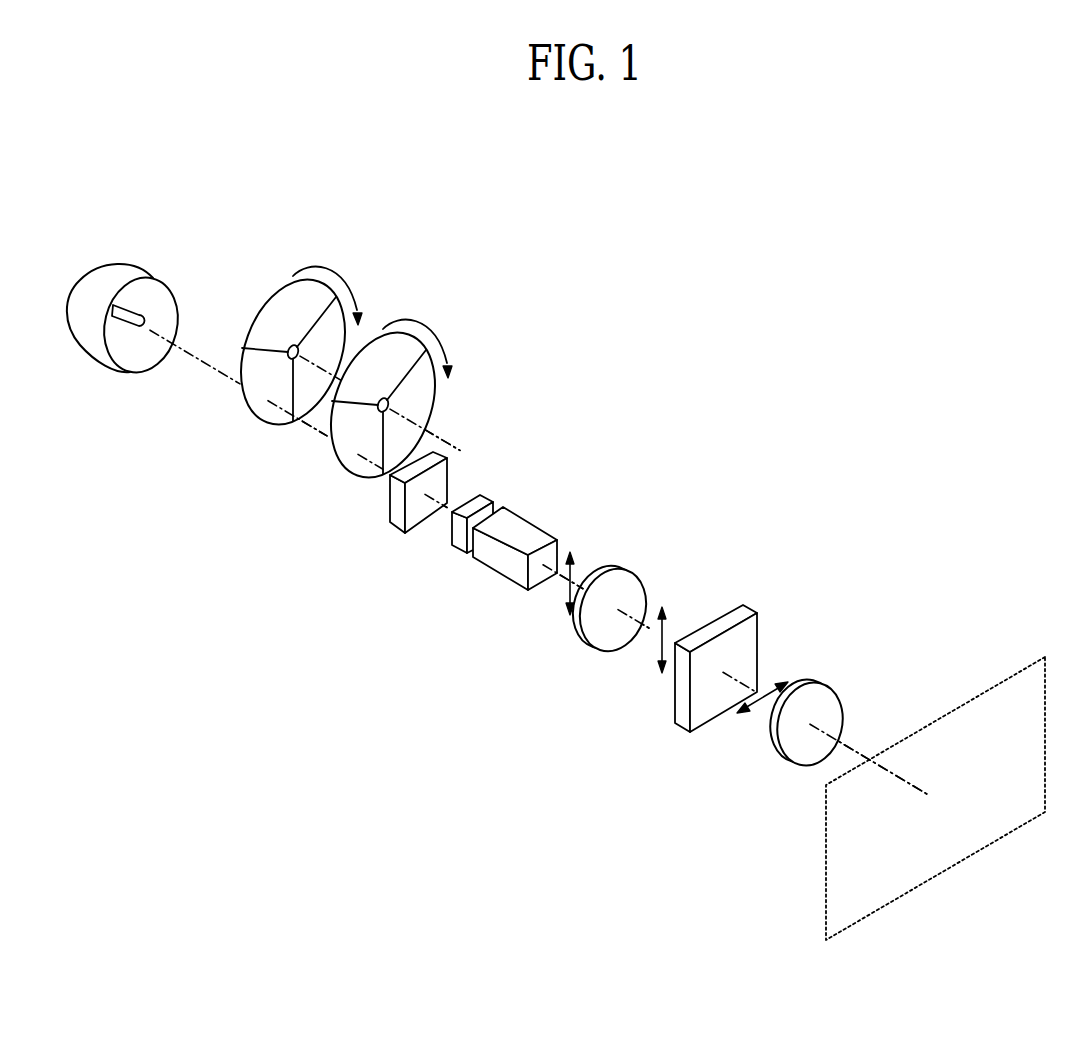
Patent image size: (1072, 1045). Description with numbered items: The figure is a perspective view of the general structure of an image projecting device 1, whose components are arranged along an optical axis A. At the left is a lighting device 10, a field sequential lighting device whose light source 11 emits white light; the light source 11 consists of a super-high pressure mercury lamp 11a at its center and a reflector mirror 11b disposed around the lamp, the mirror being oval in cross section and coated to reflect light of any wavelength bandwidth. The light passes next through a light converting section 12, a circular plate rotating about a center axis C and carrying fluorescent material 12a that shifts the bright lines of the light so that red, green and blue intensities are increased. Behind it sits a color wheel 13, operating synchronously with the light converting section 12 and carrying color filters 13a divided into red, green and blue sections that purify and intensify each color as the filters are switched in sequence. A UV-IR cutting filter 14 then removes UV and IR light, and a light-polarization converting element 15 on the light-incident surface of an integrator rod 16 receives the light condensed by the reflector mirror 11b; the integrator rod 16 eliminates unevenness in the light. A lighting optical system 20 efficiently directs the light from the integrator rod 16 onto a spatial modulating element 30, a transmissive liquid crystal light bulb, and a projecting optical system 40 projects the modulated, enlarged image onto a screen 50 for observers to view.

The image projecting device 1 is at (905, 393).
The lighting device 10 is at (456, 202).
The light source 11 is at (107, 300).
The super-high pressure mercury lamp 11a is at (143, 326).
The reflector mirror 11b is at (76, 322).
The light converting section 12 is at (241, 399).
The fluorescent material 12a is at (279, 310).
The color wheel 13 is at (434, 408).
The color filter 13a is at (405, 343).
The UV-IR cutting filter 14 is at (392, 526).
The light-polarization converting element 15 is at (457, 553).
The integrator rod 16 is at (528, 590).
The lighting optical system 20 is at (652, 556).
The spatial modulating element 30 is at (766, 602).
The projecting optical system 40 is at (845, 680).
The screen 50 is at (822, 846).